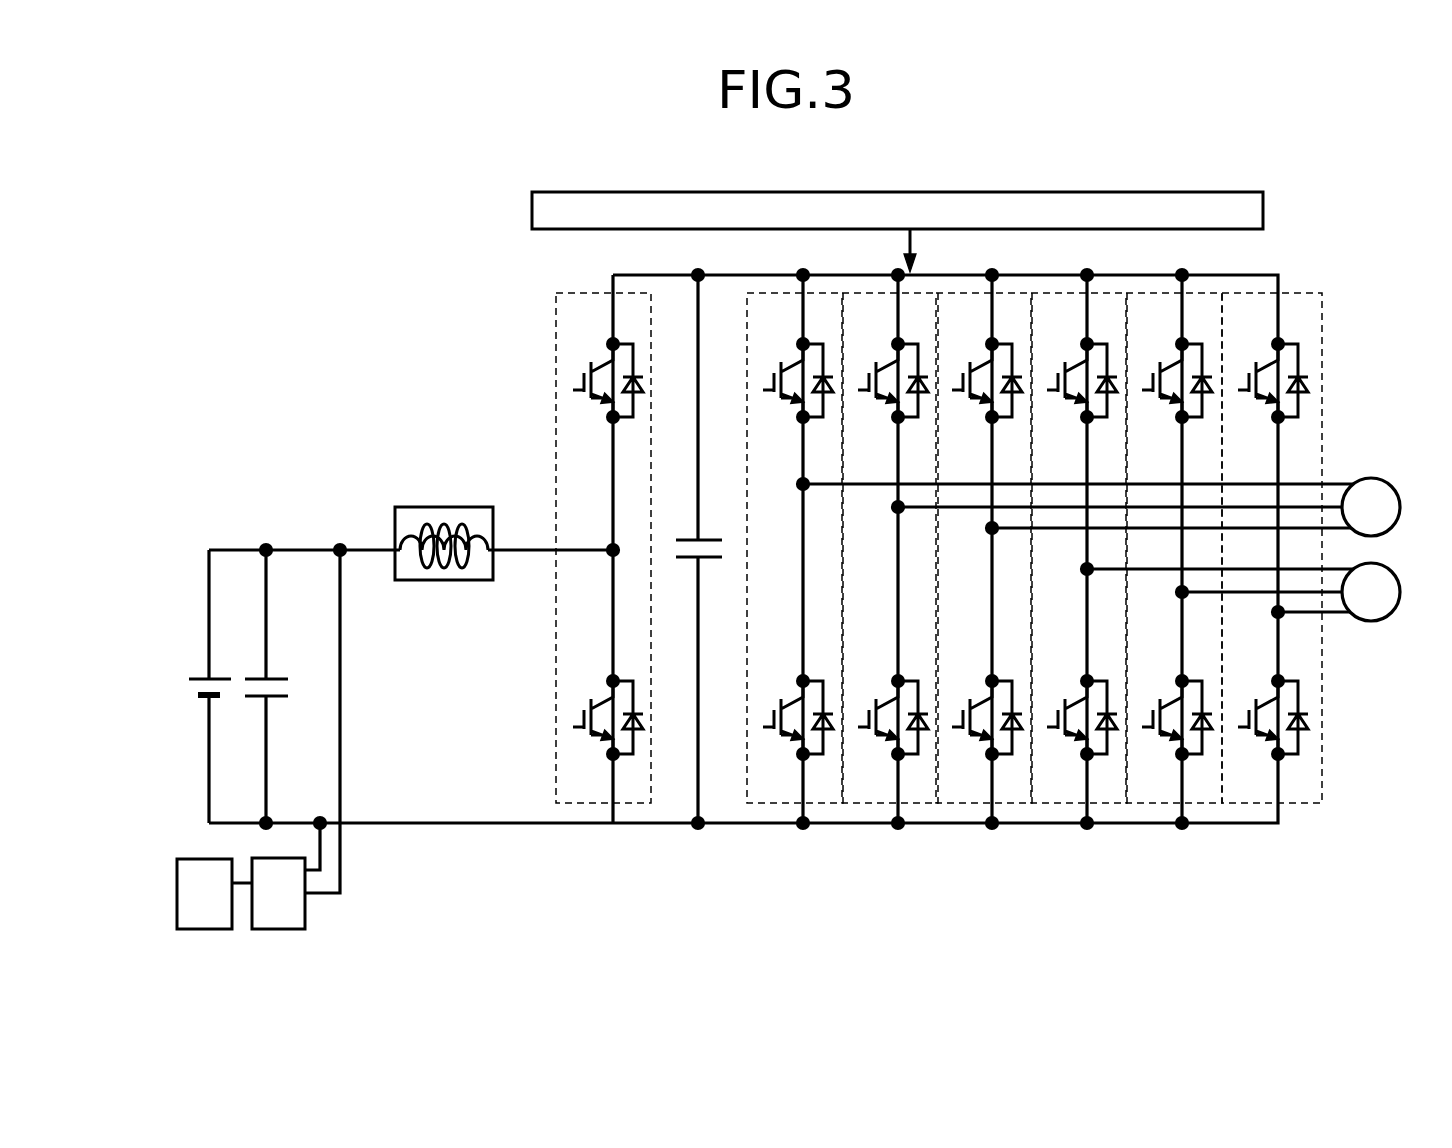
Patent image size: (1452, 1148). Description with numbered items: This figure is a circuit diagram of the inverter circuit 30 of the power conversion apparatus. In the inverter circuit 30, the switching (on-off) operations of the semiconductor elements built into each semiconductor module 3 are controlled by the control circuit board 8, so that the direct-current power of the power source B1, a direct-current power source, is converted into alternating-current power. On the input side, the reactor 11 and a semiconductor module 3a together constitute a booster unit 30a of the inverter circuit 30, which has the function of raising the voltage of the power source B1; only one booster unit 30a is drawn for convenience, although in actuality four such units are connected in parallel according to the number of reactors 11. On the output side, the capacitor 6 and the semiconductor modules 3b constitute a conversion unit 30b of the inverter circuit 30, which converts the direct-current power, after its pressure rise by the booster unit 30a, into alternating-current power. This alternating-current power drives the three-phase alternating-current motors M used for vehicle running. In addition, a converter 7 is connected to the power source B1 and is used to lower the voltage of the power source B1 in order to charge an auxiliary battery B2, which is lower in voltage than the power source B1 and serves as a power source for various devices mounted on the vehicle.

The semiconductor module 3 is at (940, 485).
The semiconductor module 3a is at (590, 297).
The semiconductor modules 3b is at (968, 297).
The control circuit board 8 is at (990, 210).
The inverter circuit 30 is at (1320, 210).
The booster unit 30a is at (652, 833).
The conversion unit 30b is at (1336, 833).
The capacitor 6 is at (694, 578).
The reactor 11 is at (438, 502).
The power source B1 is at (203, 676).
The auxiliary battery B2 is at (195, 876).
The converter 7 is at (298, 915).
The three-phase alternating-current motors M is at (1372, 487).